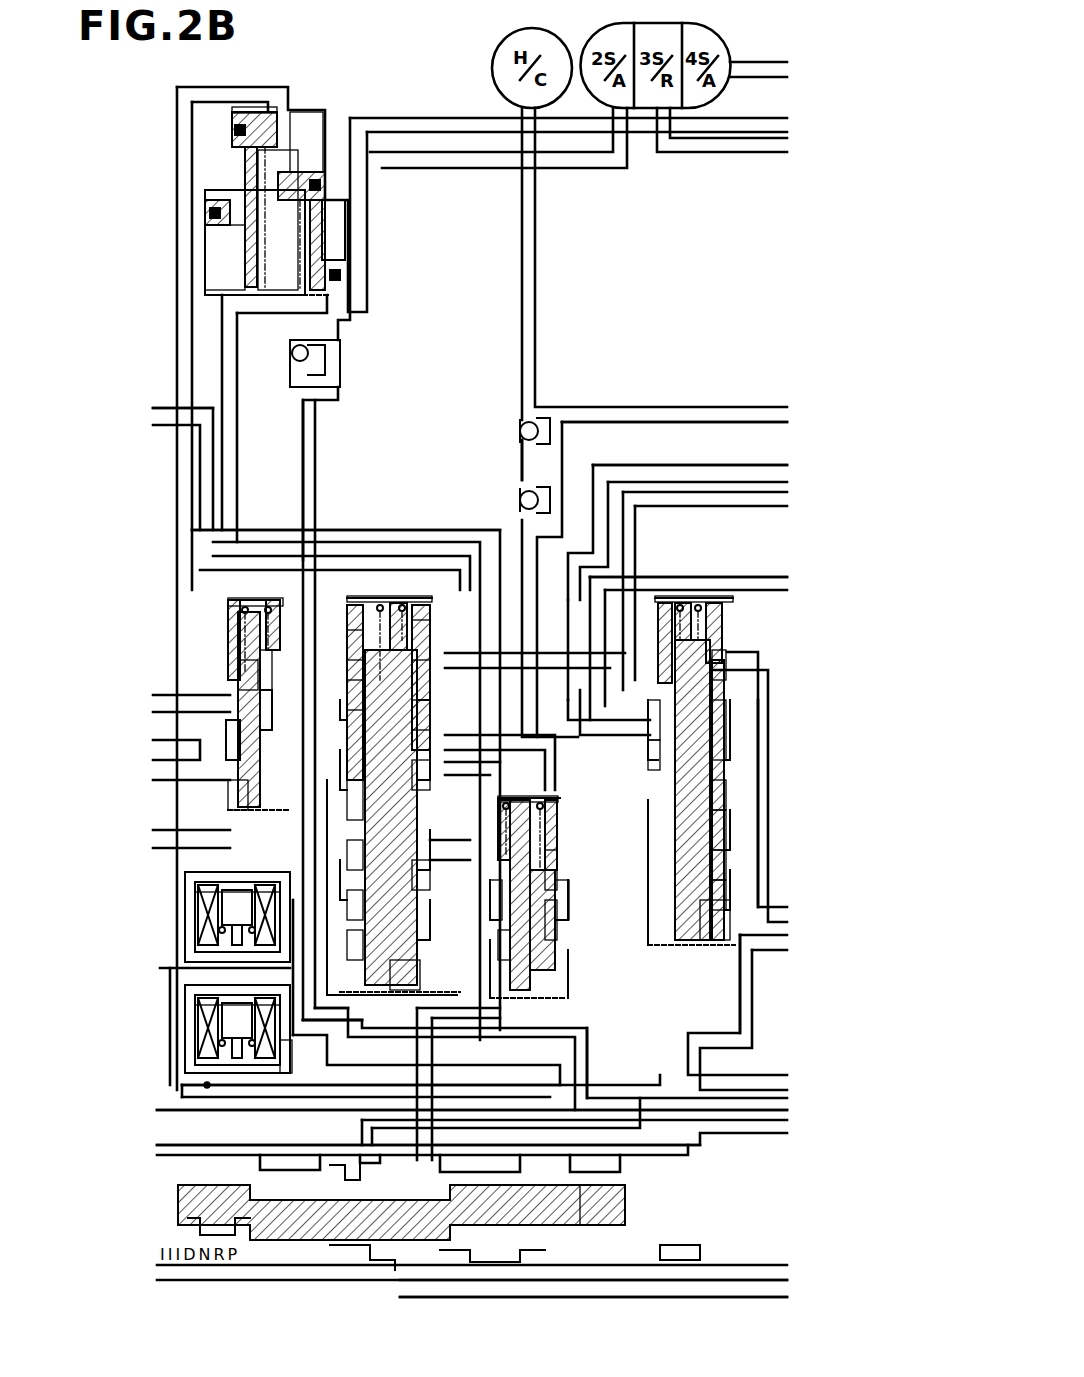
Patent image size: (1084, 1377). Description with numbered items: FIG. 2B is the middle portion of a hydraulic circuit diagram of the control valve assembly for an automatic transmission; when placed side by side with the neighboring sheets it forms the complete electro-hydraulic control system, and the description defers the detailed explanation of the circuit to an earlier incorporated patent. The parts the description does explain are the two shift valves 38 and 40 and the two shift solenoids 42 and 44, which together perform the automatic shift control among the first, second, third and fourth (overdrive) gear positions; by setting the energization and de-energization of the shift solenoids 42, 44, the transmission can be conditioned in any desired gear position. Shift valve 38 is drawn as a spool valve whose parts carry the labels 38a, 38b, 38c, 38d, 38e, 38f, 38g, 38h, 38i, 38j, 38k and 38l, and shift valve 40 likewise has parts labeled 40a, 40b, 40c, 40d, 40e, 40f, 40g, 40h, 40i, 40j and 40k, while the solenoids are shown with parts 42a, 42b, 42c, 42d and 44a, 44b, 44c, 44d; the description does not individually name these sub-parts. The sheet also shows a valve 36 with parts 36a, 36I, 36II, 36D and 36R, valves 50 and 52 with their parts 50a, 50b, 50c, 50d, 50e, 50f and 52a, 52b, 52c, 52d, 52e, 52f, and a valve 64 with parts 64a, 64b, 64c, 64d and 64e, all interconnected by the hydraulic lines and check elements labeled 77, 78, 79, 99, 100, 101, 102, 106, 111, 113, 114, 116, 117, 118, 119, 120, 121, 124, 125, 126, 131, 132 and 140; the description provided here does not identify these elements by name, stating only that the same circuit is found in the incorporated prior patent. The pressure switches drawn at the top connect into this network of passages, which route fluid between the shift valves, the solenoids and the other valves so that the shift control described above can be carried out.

The manual valve 36 is at (350, 1285).
The manual valve spool 36a is at (650, 1212).
The manual valve port I 36I is at (345, 1170).
The manual valve port II 36II is at (380, 1260).
The manual valve port D 36D is at (445, 1180).
The manual valve port R 36R is at (655, 1248).
The shift valve 38 is at (380, 975).
The shift valve plug 38a is at (360, 598).
The shift valve land 38b is at (358, 645).
The shift valve land 38c is at (415, 975).
The shift valve land 38d is at (355, 692).
The shift valve port 38e is at (430, 720).
The shift valve port 38f is at (362, 803).
The shift valve port 38g is at (360, 817).
The shift valve port 38h is at (362, 905).
The shift valve port 38i is at (362, 945).
The shift valve port 38j is at (415, 660).
The shift valve port 38k is at (430, 760).
The shift valve port 38l is at (418, 872).
The shift valve 40 is at (690, 960).
The shift valve plug 40a is at (685, 598).
The shift valve land 40b is at (722, 620).
The shift valve land 40c is at (705, 945).
The shift valve port 40d is at (660, 720).
The shift valve port 40e is at (725, 725).
The shift valve port 40f is at (660, 760).
The shift valve port 40g is at (725, 790).
The shift valve port 40h is at (728, 853).
The shift valve port 40i is at (730, 878).
The shift valve port 40j is at (718, 657).
The shift valve port 40k is at (732, 818).
The shift solenoid 42 is at (245, 870).
The solenoid valve body 42a is at (215, 882).
The solenoid coil 42b is at (215, 900).
The solenoid plunger 42c is at (230, 920).
The solenoid valve element 42d is at (235, 930).
The shift solenoid 44 is at (170, 990).
The solenoid valve body 44a is at (215, 1000).
The solenoid coil 44b is at (215, 1022).
The solenoid valve port 44c is at (290, 1045).
The solenoid valve element 44d is at (235, 1040).
The shift valve 50 is at (272, 600).
The shift valve plug 50a is at (275, 597).
The shift valve land 50b is at (260, 680).
The shift valve port 50c is at (285, 740).
The shift valve port 50d is at (235, 755).
The shift valve port 50e is at (235, 800).
The shift valve land 50f is at (268, 690).
The shift valve 52 is at (505, 905).
The shift valve plug 52a is at (545, 792).
The shift valve land 52b is at (508, 948).
The shift valve port 52c is at (490, 900).
The shift valve port 52d is at (555, 900).
The shift valve port 52e is at (545, 930).
The shift valve port 52f is at (555, 885).
The lock-up control valve 64 is at (308, 100).
The valve plug 64a is at (256, 107).
The valve spool 64b is at (257, 248).
The valve port 64c is at (335, 238).
The valve chamber 64d is at (305, 137).
The valve chamber 64e is at (227, 247).
The fluid passage 77 is at (540, 1282).
The fluid passage 78 is at (208, 1158).
The fluid passage 79 is at (165, 1093).
The fluid passage 99 is at (165, 968).
The fluid passage 100 is at (345, 985).
The fluid passage 101 is at (208, 1088).
The fluid passage 102 is at (613, 1083).
The fluid passage 106 is at (155, 408).
The fluid passage 111 is at (408, 528).
The fluid passage 113 is at (382, 302).
The check valve 114 is at (340, 360).
The fluid passage 116 is at (316, 880).
The fluid passage 117 is at (330, 845).
The fluid passage 118 is at (520, 333).
The check valve 119 is at (510, 430).
The check valve 120 is at (510, 494).
The fluid passage 121 is at (668, 422).
The fluid passage 124 is at (616, 470).
The fluid passage 125 is at (550, 640).
The fluid passage 126 is at (667, 577).
The fluid passage 131 is at (760, 760).
The fluid passage 132 is at (740, 1013).
The fluid passage 140 is at (647, 1297).